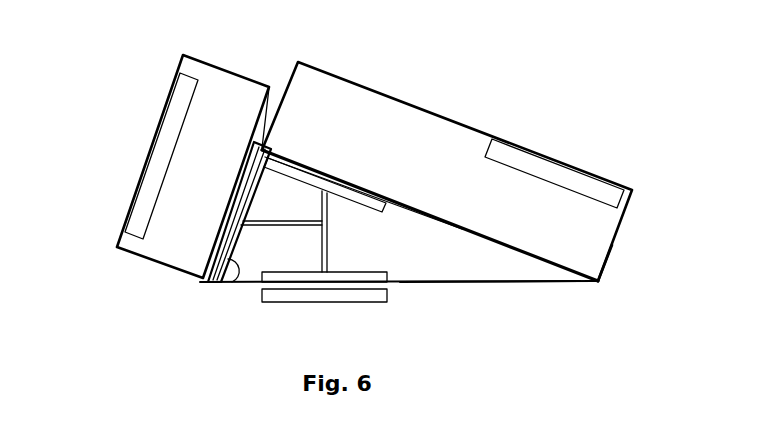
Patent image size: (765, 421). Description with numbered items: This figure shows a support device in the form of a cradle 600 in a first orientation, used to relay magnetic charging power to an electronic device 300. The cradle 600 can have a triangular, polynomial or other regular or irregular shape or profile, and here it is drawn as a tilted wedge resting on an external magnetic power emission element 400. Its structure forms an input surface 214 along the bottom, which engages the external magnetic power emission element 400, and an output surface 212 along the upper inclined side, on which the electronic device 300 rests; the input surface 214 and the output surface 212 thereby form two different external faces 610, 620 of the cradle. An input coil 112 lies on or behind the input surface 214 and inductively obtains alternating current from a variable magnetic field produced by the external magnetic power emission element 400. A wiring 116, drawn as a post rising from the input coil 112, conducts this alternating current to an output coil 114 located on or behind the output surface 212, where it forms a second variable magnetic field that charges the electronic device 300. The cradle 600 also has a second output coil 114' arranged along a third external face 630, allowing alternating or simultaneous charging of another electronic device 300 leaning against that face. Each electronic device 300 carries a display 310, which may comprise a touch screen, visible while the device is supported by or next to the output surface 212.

The electronic device 300 is at (355, 84).
The display 310 is at (158, 134).
The output surface 212 is at (268, 86).
The output coil 114 is at (380, 143).
The second output coil 114' is at (222, 239).
The wiring 116 is at (334, 237).
The input coil 112 is at (292, 279).
The external magnetic power emission element 400 is at (357, 299).
The cradle 600 is at (482, 284).
The input surface 214 is at (438, 284).
The external face 620 is at (462, 233).
The third external face 630 is at (204, 283).
The external face 610 is at (590, 289).